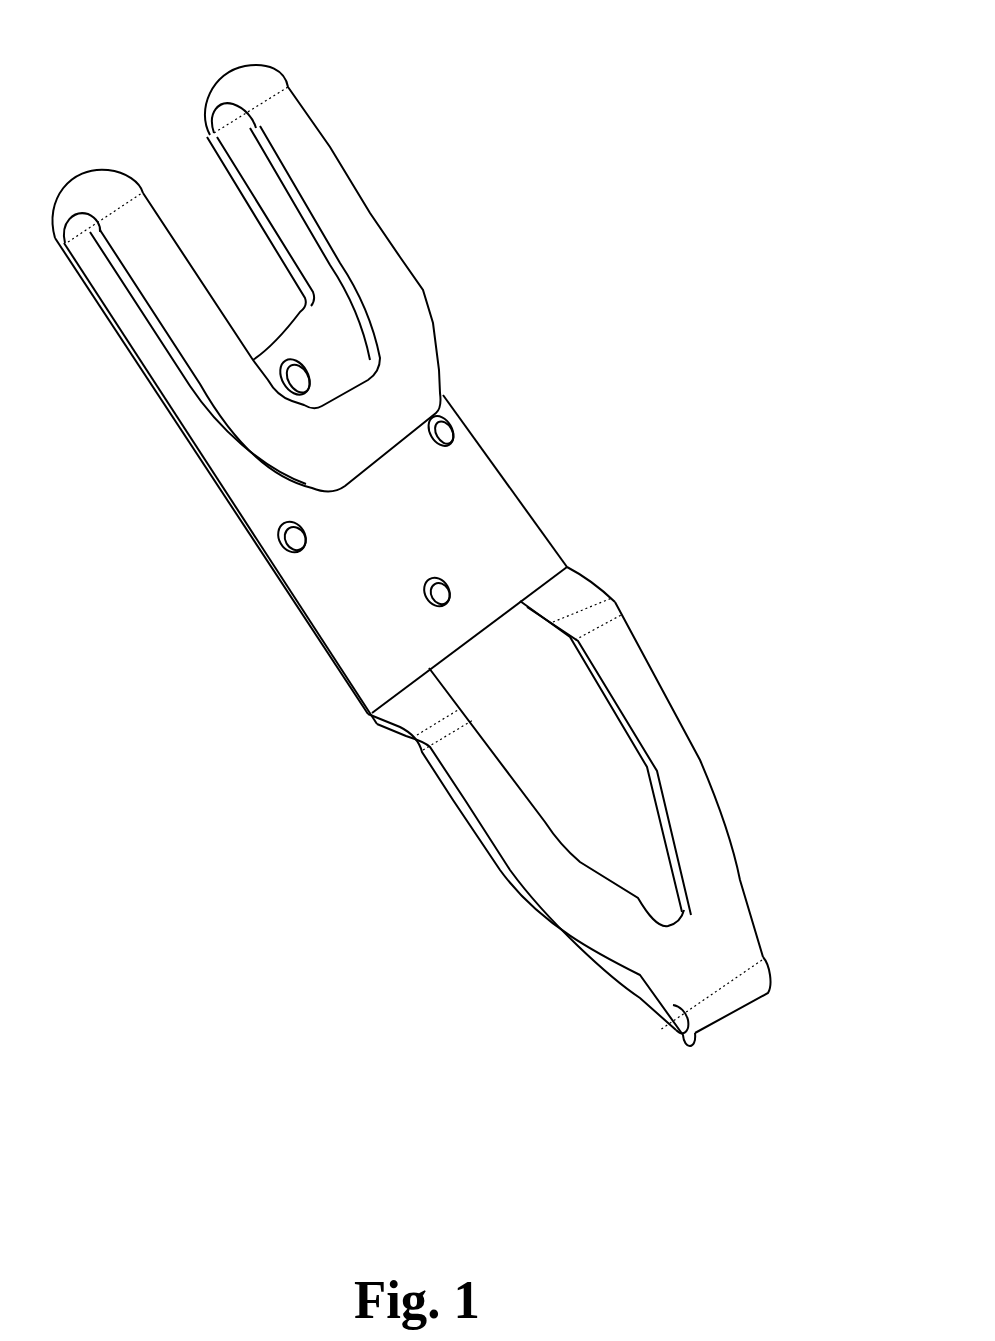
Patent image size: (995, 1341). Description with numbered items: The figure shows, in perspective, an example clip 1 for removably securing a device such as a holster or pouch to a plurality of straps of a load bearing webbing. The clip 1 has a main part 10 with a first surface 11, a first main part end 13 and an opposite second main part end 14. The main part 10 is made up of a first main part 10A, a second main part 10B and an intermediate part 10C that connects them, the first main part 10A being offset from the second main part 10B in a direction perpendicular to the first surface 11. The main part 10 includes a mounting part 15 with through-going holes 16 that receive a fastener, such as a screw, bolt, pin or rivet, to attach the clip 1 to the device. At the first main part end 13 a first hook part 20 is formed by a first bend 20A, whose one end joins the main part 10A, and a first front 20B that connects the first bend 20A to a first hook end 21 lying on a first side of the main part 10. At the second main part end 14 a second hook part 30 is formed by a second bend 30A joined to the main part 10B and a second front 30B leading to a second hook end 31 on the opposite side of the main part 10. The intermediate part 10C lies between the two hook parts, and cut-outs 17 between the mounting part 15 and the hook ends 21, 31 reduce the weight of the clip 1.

The clip 1 is at (448, 566).
The main part 10 is at (434, 591).
The first main part 10A is at (200, 449).
The second main part 10B is at (680, 727).
The intermediate part 10C is at (573, 592).
The first surface 11 is at (497, 527).
The first main part end 13 is at (205, 141).
The second main part end 14 is at (765, 958).
The mounting part 15 is at (422, 548).
The through-going holes 16 is at (310, 554).
The cut-outs 17 is at (230, 257).
The first hook part 20 is at (258, 246).
The first bend 20A is at (233, 93).
The first front 20B is at (367, 247).
The first hook end 21 is at (367, 470).
The second hook part 30 is at (703, 1044).
The second bend 30A is at (727, 1027).
The second front 30B is at (628, 1008).
The second hook end 31 is at (645, 898).